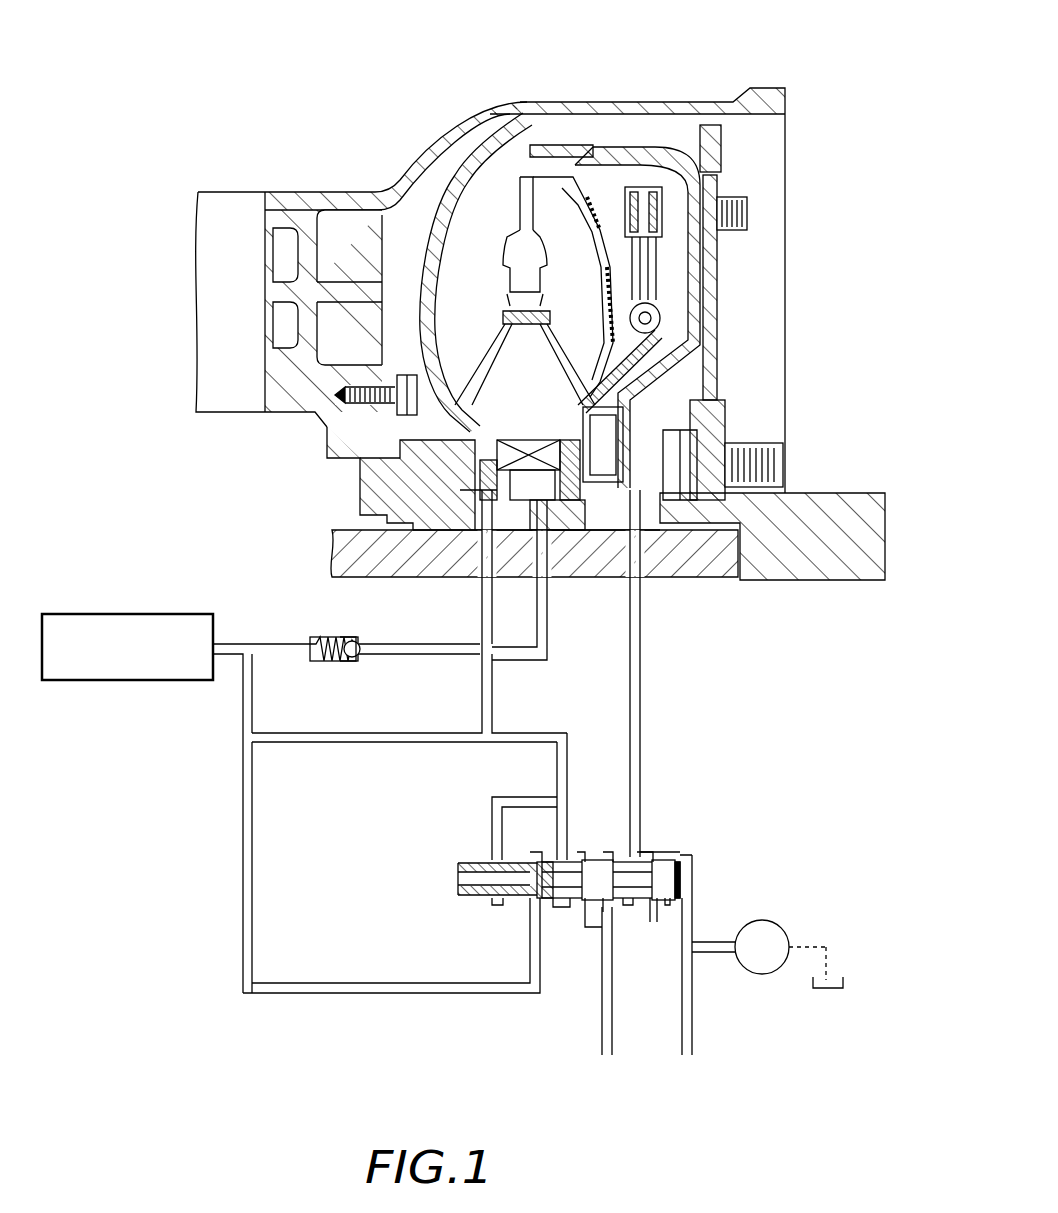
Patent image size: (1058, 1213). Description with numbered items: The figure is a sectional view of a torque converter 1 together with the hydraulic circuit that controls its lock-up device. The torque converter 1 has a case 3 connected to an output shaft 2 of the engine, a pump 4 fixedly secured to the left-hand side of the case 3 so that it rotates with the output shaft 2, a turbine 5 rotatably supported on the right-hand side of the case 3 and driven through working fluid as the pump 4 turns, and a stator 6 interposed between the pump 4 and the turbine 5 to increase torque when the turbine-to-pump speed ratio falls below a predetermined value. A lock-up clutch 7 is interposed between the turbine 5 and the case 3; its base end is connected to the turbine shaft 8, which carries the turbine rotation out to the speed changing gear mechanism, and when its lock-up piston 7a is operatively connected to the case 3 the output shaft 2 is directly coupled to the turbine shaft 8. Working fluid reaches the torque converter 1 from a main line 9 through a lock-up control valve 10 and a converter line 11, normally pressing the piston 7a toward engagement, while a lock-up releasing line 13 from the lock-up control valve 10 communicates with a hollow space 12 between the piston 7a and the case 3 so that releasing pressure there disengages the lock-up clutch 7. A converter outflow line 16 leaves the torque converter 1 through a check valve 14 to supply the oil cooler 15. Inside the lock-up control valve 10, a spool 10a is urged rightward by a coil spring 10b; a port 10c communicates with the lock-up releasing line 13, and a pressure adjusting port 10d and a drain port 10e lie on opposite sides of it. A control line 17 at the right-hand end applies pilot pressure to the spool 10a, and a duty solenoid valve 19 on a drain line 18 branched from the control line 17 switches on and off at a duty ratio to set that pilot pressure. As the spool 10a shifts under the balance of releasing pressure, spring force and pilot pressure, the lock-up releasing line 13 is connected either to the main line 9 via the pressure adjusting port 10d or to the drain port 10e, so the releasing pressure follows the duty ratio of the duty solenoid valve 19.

The torque converter 1 is at (623, 140).
The output shaft 2 is at (813, 507).
The case 3 is at (528, 150).
The pump 4 is at (470, 228).
The turbine 5 is at (556, 190).
The stator 6 is at (513, 355).
The lock-up clutch 7 is at (688, 320).
The lock-up piston 7a is at (700, 273).
The turbine shaft 8 is at (392, 578).
The main line 9 is at (602, 1030).
The lock-up control valve 10 is at (598, 864).
The spool 10a is at (663, 872).
The coil spring 10b is at (490, 863).
The port 10c is at (612, 852).
The pressure adjusting port 10d is at (608, 907).
The drain port 10e is at (663, 905).
The converter line 11 is at (490, 698).
The hollow space 12 is at (663, 367).
The lock-up releasing line 13 is at (642, 698).
The check valve 14 is at (313, 668).
The oil cooler 15 is at (118, 613).
The converter outflow line 16 is at (546, 603).
The control line 17 is at (692, 1020).
The drain line 18 is at (715, 940).
The duty solenoid valve 19 is at (780, 927).